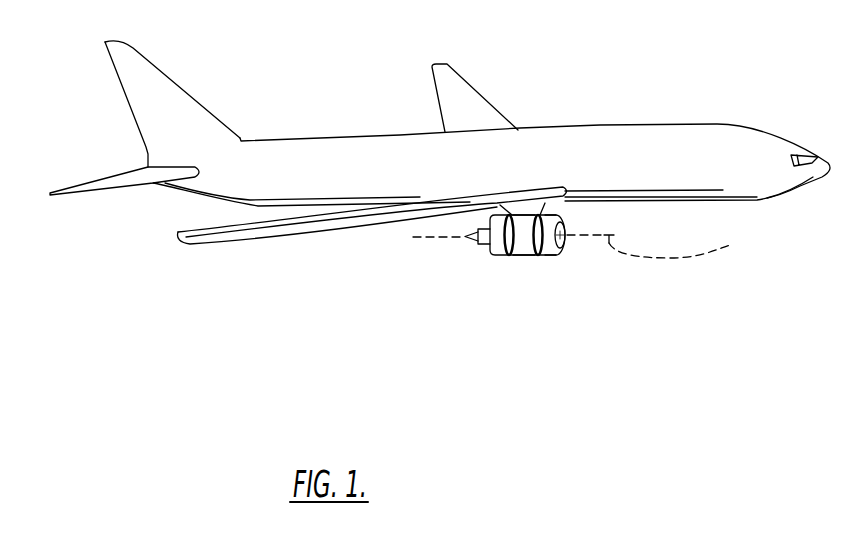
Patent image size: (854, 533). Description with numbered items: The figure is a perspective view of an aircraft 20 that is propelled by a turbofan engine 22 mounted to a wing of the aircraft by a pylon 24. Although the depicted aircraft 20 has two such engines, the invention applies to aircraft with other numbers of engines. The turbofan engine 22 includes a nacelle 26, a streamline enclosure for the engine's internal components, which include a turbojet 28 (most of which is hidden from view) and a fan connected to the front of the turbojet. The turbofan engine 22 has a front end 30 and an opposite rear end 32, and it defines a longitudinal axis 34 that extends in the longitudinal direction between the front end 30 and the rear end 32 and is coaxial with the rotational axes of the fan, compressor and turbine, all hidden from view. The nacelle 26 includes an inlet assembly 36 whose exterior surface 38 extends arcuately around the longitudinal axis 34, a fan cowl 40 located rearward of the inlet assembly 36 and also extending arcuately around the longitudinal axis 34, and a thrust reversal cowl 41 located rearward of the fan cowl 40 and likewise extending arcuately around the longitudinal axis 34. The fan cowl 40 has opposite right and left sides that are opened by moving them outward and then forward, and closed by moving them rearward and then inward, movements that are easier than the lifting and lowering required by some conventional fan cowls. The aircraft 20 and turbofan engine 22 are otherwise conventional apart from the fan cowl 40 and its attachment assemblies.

The aircraft 20 is at (548, 125).
The turbofan engine 22 is at (552, 272).
The pylon 24 is at (447, 215).
The nacelle 26 is at (563, 251).
The turbojet 28 is at (475, 247).
The front end 30 is at (573, 216).
The rear end 32 is at (423, 260).
The longitudinal axis 34 is at (586, 248).
The inlet assembly 36 is at (548, 252).
The exterior surface 38 is at (570, 224).
The fan cowl 40 is at (524, 251).
The thrust reversal cowl 41 is at (498, 252).